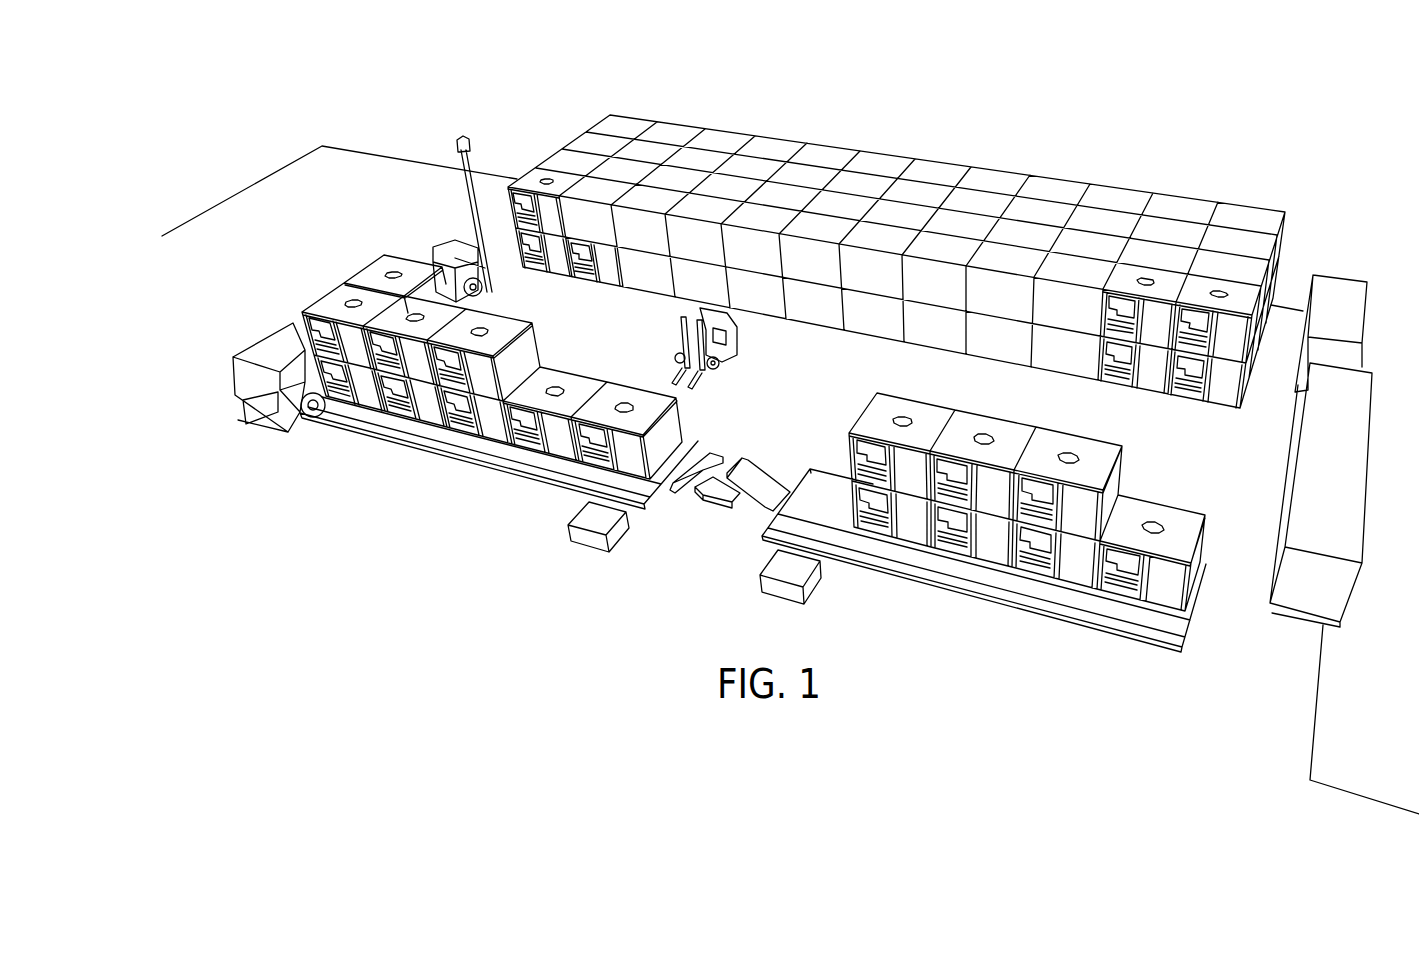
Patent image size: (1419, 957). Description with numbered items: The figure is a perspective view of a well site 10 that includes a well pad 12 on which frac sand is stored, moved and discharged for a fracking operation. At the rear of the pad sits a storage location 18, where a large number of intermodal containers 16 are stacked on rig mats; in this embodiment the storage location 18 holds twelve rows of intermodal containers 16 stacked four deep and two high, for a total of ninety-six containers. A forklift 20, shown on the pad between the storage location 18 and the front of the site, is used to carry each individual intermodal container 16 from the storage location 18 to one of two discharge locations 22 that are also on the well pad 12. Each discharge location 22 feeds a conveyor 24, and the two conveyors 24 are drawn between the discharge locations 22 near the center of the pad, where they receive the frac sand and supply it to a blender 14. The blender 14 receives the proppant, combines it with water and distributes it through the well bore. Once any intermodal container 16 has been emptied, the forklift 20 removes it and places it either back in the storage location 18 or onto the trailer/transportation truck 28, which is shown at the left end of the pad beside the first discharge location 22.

The well site 10 is at (1329, 250).
The well pad 12 is at (1308, 693).
The blender 14 is at (717, 505).
The intermodal container 16 is at (532, 175).
The storage location 18 is at (1007, 167).
The forklift 20 is at (733, 353).
The discharge location 22 is at (458, 462).
The conveyor 24 is at (693, 462).
The trailer/transportation truck 28 is at (265, 343).